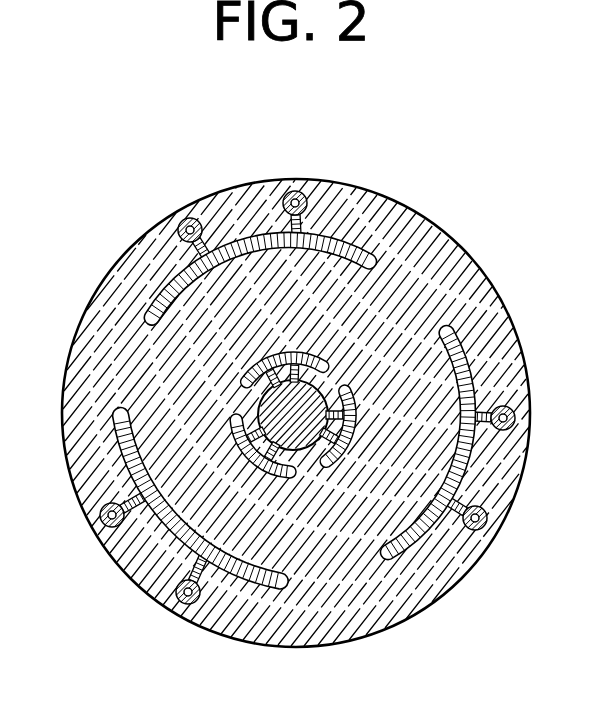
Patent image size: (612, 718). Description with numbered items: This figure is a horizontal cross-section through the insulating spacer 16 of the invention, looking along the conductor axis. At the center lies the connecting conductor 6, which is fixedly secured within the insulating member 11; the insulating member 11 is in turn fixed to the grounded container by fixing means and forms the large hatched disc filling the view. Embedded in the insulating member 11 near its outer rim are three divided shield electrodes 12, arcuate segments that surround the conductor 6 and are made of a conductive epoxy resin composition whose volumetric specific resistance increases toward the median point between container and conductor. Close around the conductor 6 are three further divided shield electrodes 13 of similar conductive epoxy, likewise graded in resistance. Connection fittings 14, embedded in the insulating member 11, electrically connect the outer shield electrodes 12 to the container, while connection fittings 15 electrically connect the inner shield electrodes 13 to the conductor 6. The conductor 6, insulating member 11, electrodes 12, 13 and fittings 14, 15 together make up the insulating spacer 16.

The connecting conductor 6 is at (355, 368).
The insulating member 11 is at (493, 281).
The divided shield electrodes 12 is at (155, 305).
The divided shield electrodes 13 is at (247, 370).
The connection fittings 14 is at (185, 214).
The connection fittings 15 is at (262, 393).
The insulating spacer 16 is at (390, 202).